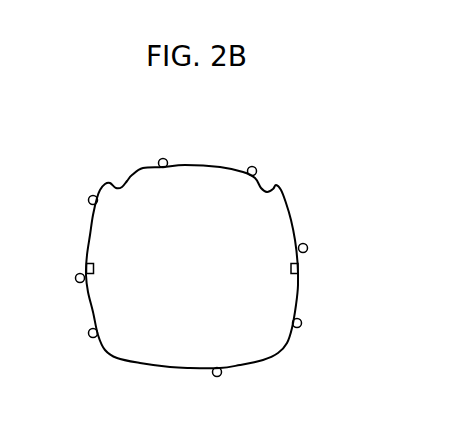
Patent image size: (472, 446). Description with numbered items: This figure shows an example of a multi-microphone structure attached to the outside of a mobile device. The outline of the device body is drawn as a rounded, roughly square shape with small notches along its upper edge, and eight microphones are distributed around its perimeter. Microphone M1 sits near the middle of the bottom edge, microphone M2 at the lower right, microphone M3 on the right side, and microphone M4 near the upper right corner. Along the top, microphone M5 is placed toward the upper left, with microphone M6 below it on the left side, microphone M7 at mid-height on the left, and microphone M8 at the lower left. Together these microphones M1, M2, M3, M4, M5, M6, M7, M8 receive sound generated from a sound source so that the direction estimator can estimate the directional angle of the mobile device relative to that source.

The microphone M1 is at (219, 386).
The microphone M2 is at (312, 331).
The microphone M3 is at (319, 249).
The microphone M4 is at (254, 158).
The microphone M5 is at (163, 151).
The microphone M6 is at (79, 192).
The microphone M7 is at (66, 281).
The microphone M8 is at (79, 342).